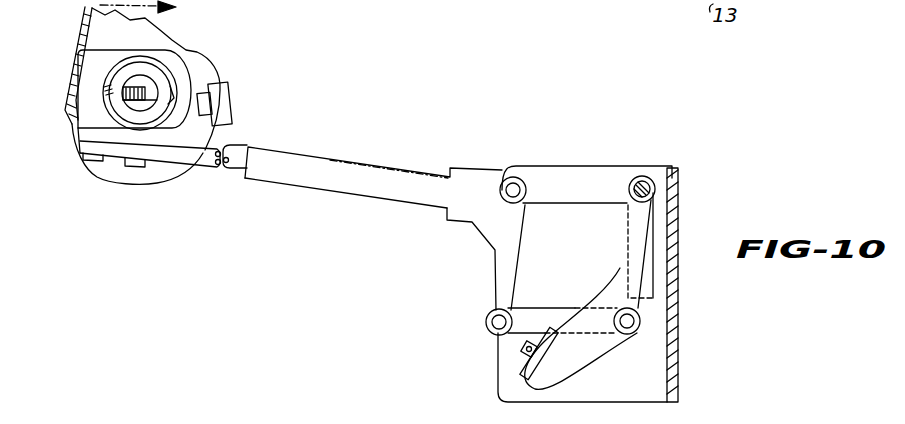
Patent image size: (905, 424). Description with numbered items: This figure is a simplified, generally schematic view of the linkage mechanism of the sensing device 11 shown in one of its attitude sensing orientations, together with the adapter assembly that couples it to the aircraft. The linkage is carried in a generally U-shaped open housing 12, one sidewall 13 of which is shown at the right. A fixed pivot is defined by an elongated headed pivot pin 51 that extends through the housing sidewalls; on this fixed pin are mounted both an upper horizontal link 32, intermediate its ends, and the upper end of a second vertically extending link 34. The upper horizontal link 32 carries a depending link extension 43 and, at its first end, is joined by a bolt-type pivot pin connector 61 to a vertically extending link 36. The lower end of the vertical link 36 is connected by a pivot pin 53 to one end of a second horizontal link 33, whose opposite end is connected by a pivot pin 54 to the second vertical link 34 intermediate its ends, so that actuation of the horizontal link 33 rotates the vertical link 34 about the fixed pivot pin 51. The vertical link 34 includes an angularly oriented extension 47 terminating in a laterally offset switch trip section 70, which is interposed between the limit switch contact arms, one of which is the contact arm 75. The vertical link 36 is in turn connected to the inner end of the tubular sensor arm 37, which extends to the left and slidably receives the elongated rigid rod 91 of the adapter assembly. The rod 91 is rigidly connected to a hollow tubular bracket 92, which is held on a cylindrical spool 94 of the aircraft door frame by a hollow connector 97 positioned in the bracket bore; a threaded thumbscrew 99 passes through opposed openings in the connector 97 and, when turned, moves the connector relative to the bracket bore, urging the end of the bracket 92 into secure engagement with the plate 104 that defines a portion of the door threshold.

The sensing device 11 is at (690, 209).
The housing 12 is at (672, 372).
The sidewall 13 is at (637, 397).
The upper horizontal link 32 is at (582, 182).
The second horizontal link 33 is at (527, 333).
The second vertically extending link 34 is at (633, 225).
The vertical link 36 is at (495, 277).
The sensor arm 37 is at (331, 163).
The link extension 43 is at (660, 280).
The angularly oriented extension 47 is at (598, 357).
The pivot pin 51 is at (648, 178).
The pivot pin 53 is at (490, 330).
The pivot pin 54 is at (637, 323).
The pivot pin connector 61 is at (518, 178).
The switch trip section 70 is at (540, 388).
The contact arm 75 is at (527, 348).
The rod 91 is at (230, 168).
The bracket 92 is at (187, 62).
The spool 94 is at (137, 105).
The connector 97 is at (170, 100).
The thumbscrew 99 is at (228, 90).
The plate 104 is at (87, 32).